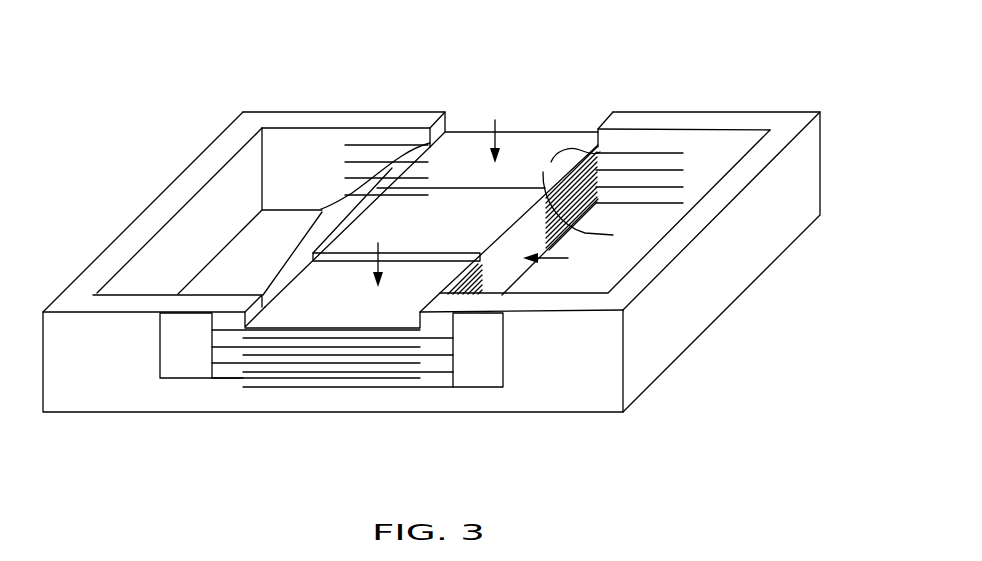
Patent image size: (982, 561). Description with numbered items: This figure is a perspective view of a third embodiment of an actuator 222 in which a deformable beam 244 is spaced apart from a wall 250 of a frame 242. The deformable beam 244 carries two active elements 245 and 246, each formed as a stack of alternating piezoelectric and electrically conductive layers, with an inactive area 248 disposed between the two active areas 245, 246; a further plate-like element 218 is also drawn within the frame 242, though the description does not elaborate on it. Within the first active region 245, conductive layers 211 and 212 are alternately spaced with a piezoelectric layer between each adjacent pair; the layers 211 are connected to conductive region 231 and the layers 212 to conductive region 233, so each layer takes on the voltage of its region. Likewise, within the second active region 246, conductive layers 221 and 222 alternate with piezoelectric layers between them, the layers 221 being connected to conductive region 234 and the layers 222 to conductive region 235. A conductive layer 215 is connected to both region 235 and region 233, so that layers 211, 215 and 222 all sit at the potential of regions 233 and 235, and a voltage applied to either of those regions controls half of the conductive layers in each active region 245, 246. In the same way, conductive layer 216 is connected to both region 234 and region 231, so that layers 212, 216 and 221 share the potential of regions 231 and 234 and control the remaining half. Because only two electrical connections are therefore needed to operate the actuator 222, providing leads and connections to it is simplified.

The conductive layer 211 is at (287, 352).
The conductive layer 212 is at (323, 330).
The conductive layer 215 is at (518, 290).
The conductive layer 216 is at (506, 221).
The plate 218 is at (428, 214).
The conductive layer 221 is at (558, 152).
The actuator 222 is at (136, 86).
The conductive region 231 is at (162, 348).
The conductive region 233 is at (495, 350).
The conductive region 234 is at (384, 111).
The conductive region 235 is at (667, 111).
The frame 242 is at (124, 231).
The deformable beam 244 is at (322, 209).
The active element 245 is at (378, 254).
The active element 246 is at (499, 130).
The inactive area 248 is at (565, 259).
The wall 250 is at (273, 272).